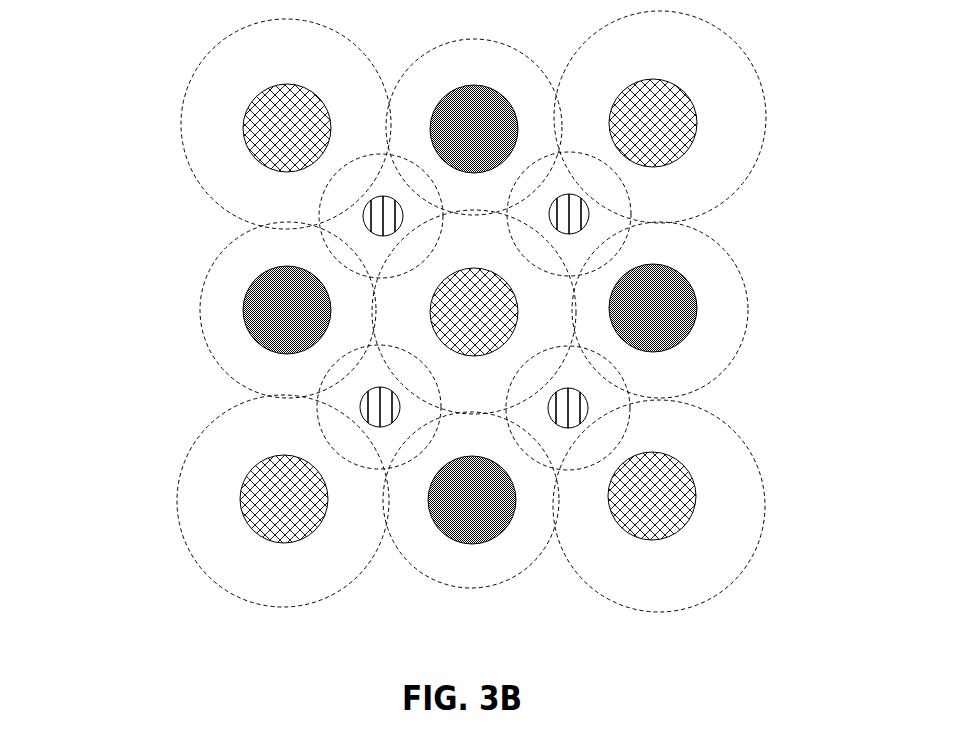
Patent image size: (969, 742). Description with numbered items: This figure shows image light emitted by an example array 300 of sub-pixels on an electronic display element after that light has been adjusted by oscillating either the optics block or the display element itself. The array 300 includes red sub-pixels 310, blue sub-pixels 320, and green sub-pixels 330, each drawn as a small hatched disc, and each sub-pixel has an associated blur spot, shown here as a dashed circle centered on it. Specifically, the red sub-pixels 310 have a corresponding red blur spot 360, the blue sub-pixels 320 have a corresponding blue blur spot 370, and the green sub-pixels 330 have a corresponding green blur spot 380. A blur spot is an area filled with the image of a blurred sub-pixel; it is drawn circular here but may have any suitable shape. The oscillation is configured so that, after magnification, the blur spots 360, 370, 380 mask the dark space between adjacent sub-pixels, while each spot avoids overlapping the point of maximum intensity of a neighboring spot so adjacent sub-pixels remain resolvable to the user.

The array 300 is at (125, 50).
The red sub-pixel 310 is at (245, 116).
The blue sub-pixel 320 is at (245, 298).
The green sub-pixel 330 is at (358, 409).
The red blur spot 360 is at (675, 13).
The blue blur spot 370 is at (730, 253).
The green blur spot 380 is at (625, 418).